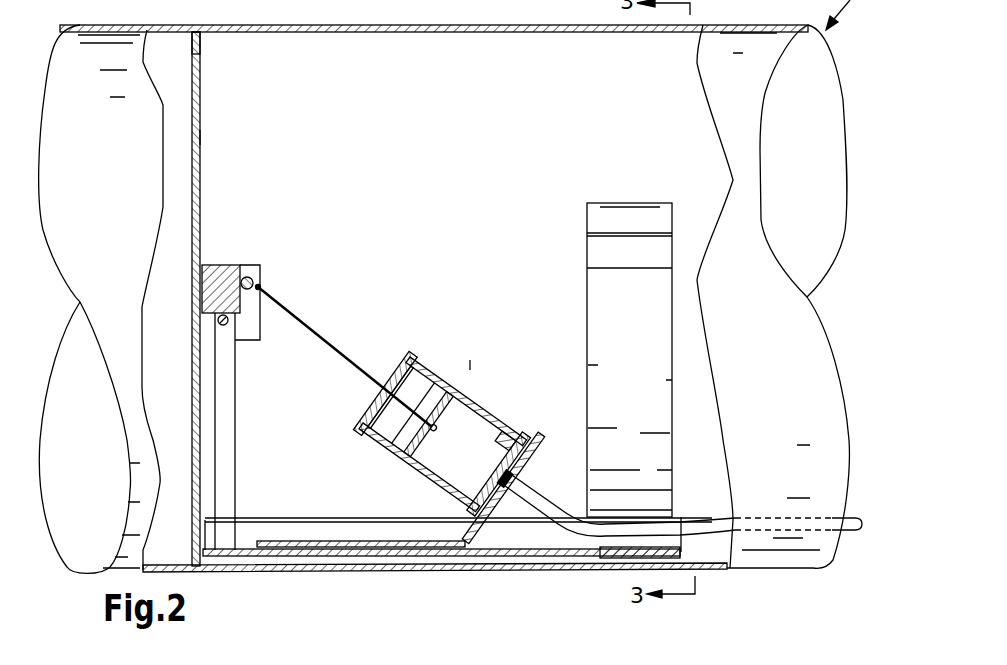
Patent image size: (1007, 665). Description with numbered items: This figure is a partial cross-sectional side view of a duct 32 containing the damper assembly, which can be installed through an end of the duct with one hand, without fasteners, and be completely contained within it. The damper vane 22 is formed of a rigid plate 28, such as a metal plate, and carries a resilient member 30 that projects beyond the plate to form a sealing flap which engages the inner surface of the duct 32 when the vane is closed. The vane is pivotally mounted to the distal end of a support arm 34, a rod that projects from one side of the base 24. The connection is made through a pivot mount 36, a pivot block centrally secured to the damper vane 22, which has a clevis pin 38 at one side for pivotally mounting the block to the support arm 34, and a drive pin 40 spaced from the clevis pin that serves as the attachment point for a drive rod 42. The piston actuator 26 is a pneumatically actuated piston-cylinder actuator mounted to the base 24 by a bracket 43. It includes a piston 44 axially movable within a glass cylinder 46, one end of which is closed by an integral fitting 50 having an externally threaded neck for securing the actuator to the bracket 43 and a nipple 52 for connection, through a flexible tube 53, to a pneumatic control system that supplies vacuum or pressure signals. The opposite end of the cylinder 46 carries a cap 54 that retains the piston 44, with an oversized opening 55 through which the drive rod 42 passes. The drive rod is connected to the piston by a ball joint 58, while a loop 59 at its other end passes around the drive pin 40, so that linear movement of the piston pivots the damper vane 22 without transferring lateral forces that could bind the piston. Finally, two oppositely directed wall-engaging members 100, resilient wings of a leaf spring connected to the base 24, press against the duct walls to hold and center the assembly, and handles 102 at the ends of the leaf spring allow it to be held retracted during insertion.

The damper vane 22 is at (235, 137).
The base 24 is at (500, 530).
The piston actuator 26 is at (467, 345).
The rigid plate 28 is at (200, 163).
The resilient member 30 is at (198, 44).
The duct 32 is at (366, 27).
The support arm 34 is at (230, 465).
The pivot mount 36 is at (217, 265).
The clevis pin 38 is at (220, 320).
The drive pin 40 is at (254, 279).
The drive rod 42 is at (305, 328).
The bracket 43 is at (333, 553).
The piston 44 is at (470, 402).
The cylinder 46 is at (493, 420).
The fitting 50 is at (470, 497).
The nipple 52 is at (538, 488).
The flexible tube 53 is at (597, 530).
The cap 54 is at (416, 363).
The oversized opening 55 is at (372, 403).
The ball joint 58 is at (430, 450).
The loop 59 is at (262, 286).
The wall-engaging members 100 is at (617, 300).
The handles 102 is at (600, 253).